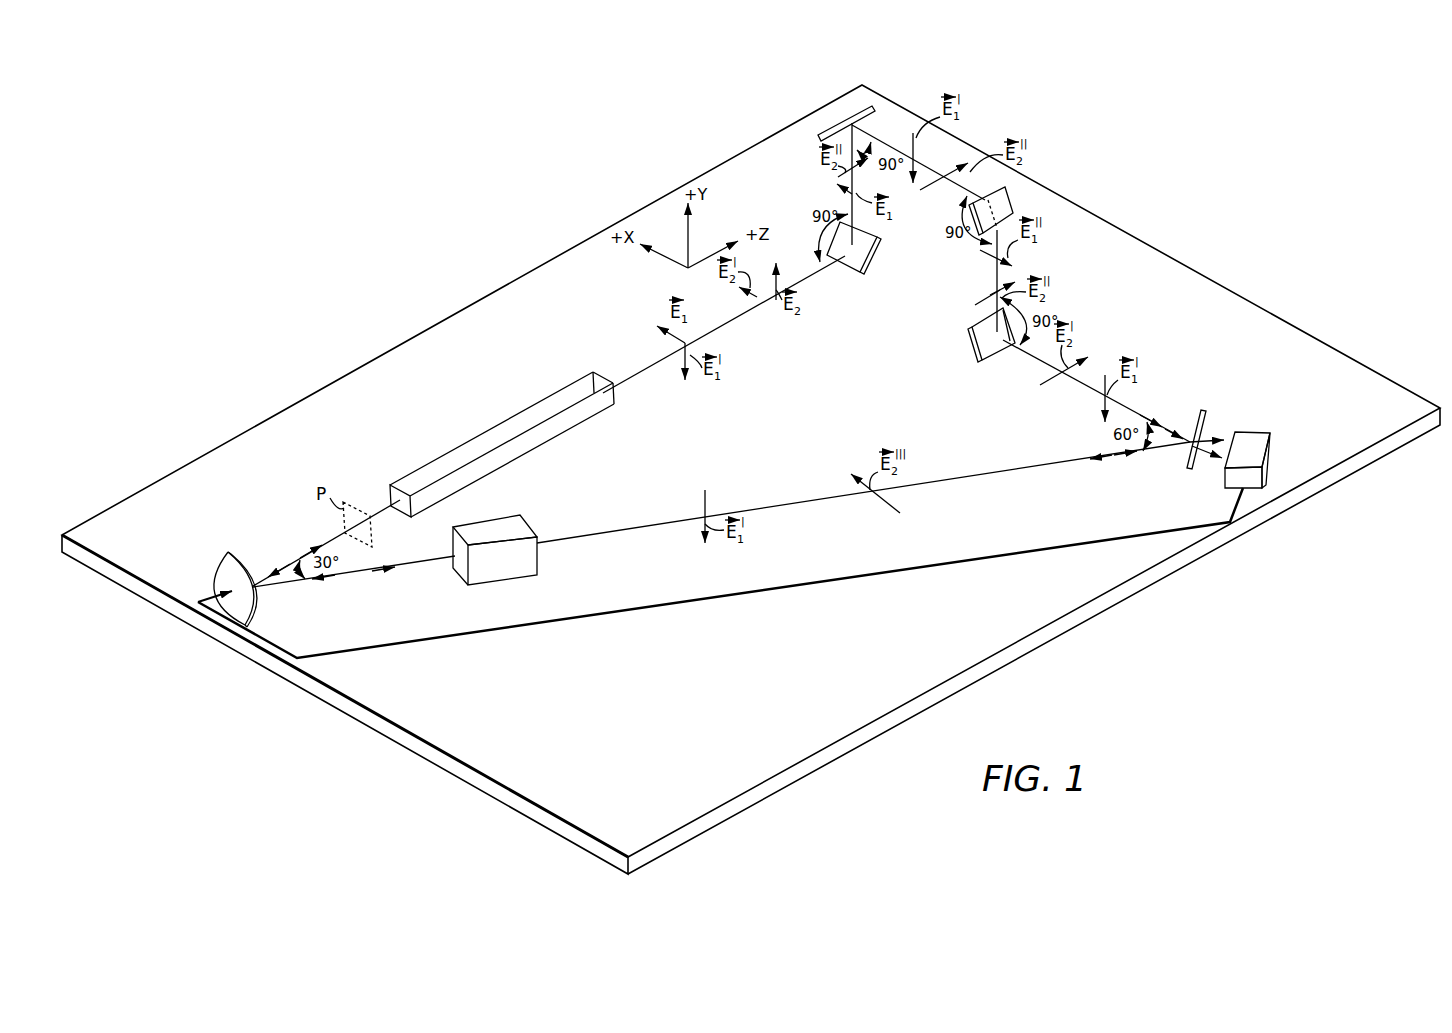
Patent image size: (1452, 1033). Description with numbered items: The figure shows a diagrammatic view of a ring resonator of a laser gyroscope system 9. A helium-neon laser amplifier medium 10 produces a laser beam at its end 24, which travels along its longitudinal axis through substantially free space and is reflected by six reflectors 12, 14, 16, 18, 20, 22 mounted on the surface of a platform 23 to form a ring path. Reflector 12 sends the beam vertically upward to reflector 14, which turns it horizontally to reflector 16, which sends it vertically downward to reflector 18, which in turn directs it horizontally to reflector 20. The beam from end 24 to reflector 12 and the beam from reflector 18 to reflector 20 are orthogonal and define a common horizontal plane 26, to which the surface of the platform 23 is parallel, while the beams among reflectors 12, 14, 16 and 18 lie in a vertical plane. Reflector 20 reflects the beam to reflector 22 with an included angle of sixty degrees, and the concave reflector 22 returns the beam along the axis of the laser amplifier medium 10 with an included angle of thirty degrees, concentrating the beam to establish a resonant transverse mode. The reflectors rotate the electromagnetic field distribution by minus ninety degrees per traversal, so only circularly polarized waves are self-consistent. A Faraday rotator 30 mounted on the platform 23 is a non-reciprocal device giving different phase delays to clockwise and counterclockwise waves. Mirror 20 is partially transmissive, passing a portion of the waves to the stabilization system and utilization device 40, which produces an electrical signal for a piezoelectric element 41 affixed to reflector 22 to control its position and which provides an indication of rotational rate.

The laser gyroscope system 9 is at (1172, 222).
The laser amplifier medium 10 is at (470, 442).
The reflector 12 is at (873, 251).
The reflector 14 is at (828, 131).
The reflector 16 is at (1010, 200).
The reflector 18 is at (972, 345).
The reflector 20 is at (1207, 419).
The reflector 22 is at (233, 556).
The platform 23 is at (180, 612).
The end 24 is at (598, 374).
The horizontal plane 26 is at (822, 412).
The Faraday rotator 30 is at (520, 520).
The stabilization system and utilization device 40 is at (1266, 460).
The piezoelectric element 41 is at (219, 578).